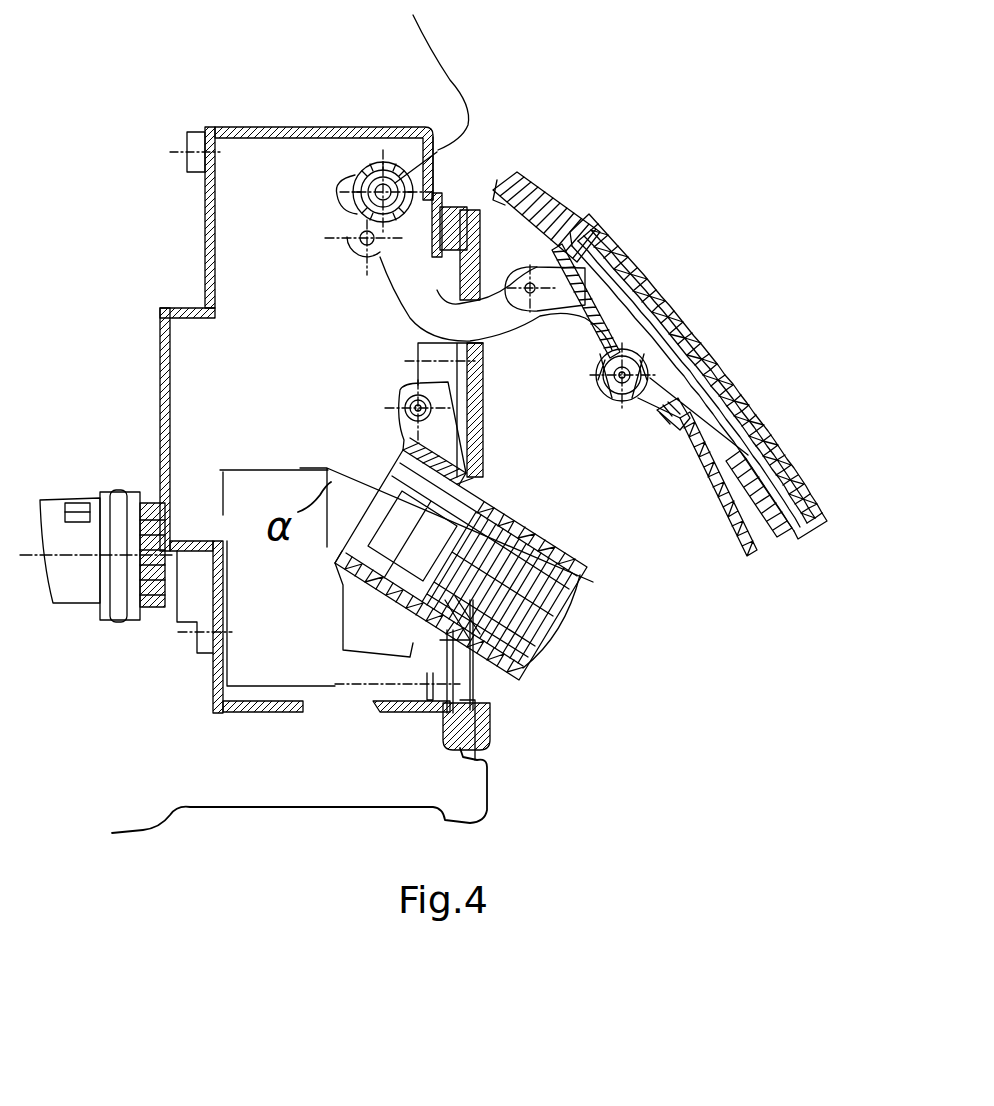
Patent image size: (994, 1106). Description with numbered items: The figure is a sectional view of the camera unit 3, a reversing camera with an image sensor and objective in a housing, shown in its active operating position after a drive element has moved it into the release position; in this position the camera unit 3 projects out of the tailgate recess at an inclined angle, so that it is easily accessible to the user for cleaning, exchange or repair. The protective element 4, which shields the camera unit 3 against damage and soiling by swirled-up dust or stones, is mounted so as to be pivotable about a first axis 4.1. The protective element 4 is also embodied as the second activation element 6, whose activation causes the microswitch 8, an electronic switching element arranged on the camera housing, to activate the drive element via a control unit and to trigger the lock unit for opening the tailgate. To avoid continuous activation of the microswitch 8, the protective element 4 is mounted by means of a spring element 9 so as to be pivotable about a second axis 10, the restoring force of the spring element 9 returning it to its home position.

The camera unit 3 is at (570, 557).
The protective element 4 is at (587, 213).
The first axis 4.1 is at (437, 150).
The second activation element 6 is at (672, 296).
The microswitch 8 is at (463, 667).
The spring element 9 is at (604, 382).
The second axis 10 is at (620, 400).